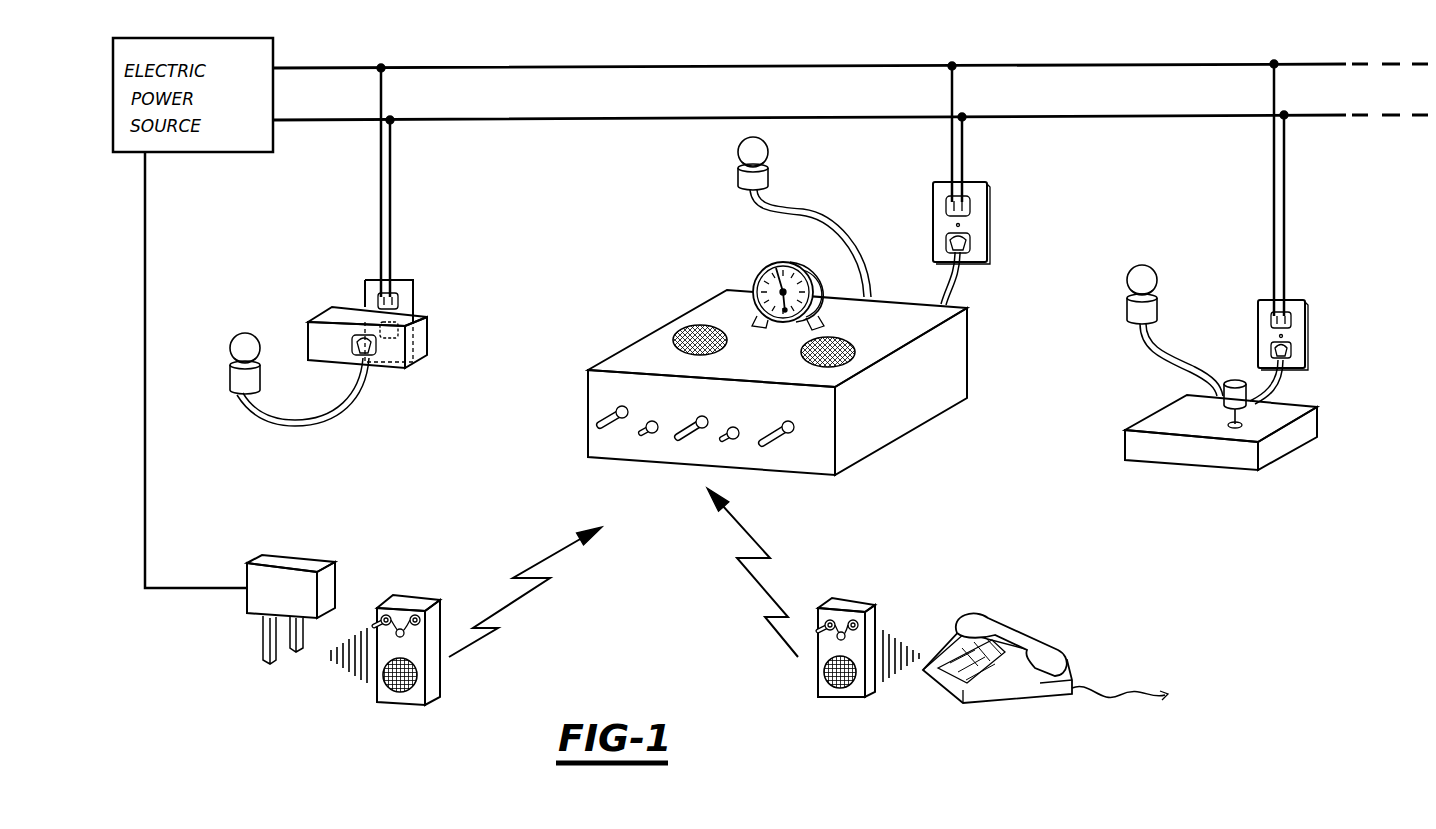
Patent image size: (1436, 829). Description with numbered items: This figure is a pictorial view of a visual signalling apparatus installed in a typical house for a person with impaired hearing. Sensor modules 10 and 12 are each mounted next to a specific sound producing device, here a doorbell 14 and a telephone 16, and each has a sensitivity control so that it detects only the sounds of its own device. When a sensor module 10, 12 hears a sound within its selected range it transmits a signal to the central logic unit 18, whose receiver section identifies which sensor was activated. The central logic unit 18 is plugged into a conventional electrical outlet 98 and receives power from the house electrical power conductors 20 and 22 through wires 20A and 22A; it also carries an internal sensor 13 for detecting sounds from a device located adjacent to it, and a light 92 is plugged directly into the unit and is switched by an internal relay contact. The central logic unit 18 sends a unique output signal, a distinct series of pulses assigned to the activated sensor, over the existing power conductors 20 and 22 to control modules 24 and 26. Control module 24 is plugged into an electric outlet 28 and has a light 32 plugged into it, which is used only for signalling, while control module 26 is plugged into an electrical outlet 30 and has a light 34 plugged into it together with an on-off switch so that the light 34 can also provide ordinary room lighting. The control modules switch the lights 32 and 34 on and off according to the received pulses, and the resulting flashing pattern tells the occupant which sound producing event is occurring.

The sensor module 10 is at (430, 678).
The sensor module 12 is at (818, 690).
The internal sensor 13 is at (685, 318).
The doorbell 14 is at (287, 563).
The telephone 16 is at (1032, 628).
The central logic unit 18 is at (686, 452).
The electrical power conductor 20 is at (662, 66).
The electrical power conductor 22 is at (692, 118).
The wire 20A is at (920, 134).
The wire 22A is at (986, 159).
The control module 24 is at (420, 357).
The control module 26 is at (1125, 447).
The electric outlet 28 is at (415, 299).
The electrical outlet 30 is at (1298, 329).
The light 32 is at (230, 343).
The light 34 is at (1128, 277).
The light 92 is at (772, 186).
The wall outlet 98 is at (938, 224).